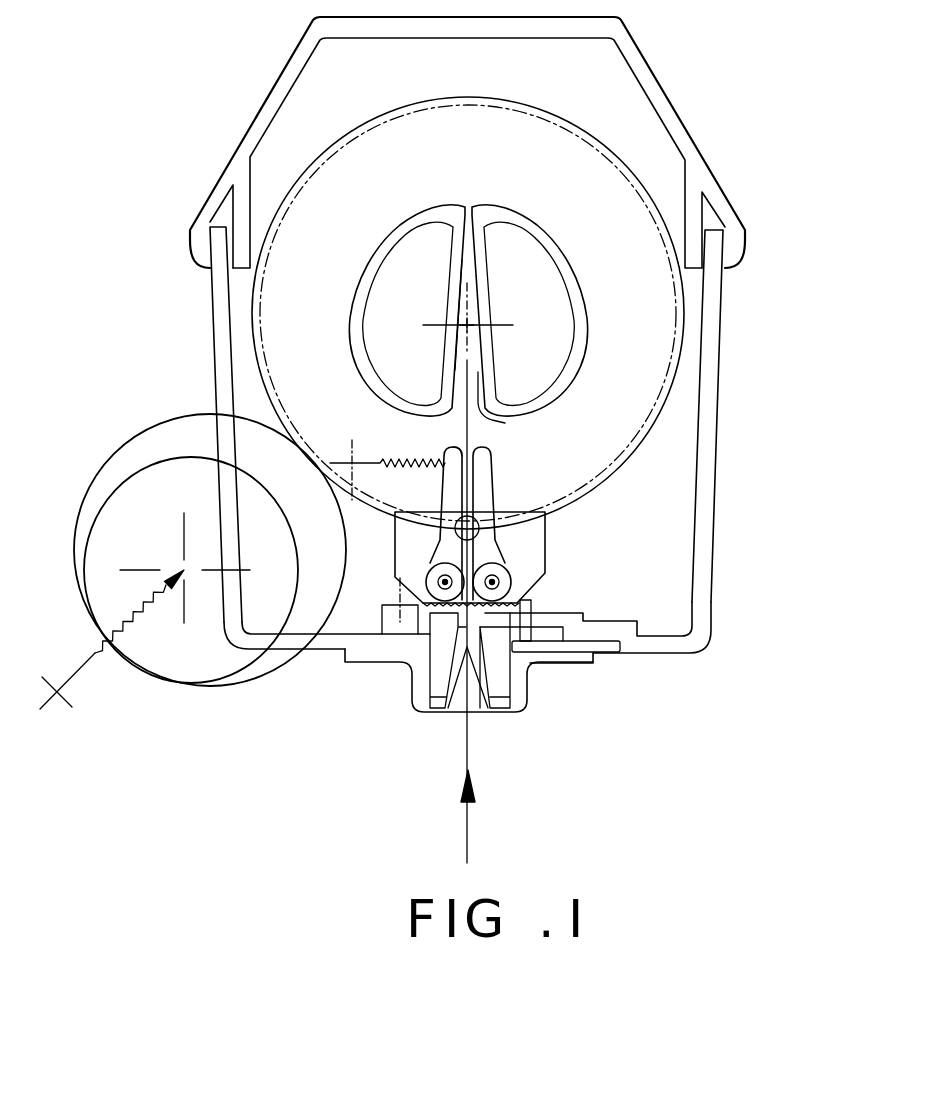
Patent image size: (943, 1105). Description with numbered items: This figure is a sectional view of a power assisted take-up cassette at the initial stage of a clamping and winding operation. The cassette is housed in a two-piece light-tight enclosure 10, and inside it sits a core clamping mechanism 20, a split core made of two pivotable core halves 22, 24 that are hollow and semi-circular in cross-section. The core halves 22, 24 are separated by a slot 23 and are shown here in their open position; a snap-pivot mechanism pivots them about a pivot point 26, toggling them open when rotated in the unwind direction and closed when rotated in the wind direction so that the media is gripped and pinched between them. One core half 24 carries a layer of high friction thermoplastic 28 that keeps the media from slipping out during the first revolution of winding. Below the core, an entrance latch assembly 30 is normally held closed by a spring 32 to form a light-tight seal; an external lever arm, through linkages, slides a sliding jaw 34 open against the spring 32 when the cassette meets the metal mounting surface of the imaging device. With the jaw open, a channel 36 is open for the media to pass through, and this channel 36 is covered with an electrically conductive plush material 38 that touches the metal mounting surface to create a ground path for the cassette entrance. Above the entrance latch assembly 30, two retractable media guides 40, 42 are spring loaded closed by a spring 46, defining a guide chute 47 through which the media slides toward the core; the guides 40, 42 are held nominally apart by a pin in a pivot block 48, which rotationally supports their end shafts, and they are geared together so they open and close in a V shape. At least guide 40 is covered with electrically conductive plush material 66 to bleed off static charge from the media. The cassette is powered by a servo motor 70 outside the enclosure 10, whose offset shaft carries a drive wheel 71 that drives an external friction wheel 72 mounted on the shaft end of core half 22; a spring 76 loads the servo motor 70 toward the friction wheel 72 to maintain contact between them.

The light-tight enclosure 10 is at (652, 66).
The external friction wheel 72 is at (546, 108).
The core clamping mechanism 20 is at (461, 185).
The pivotable core half 22 is at (350, 300).
The slot 23 is at (457, 380).
The pivotable core half 24 is at (591, 324).
The pivot point 26 is at (470, 322).
The layer of high friction thermoplastic 28 is at (503, 433).
The spring 46 is at (385, 443).
The guide chute 47 is at (450, 447).
The retractable media guide 40 is at (493, 472).
The retractable media guide 42 is at (442, 492).
The electrically conductive plush material 66 is at (495, 498).
The pivot block 48 is at (546, 544).
The spring 32 is at (540, 597).
The entrance latch assembly 30 is at (433, 736).
The sliding jaw 34 is at (498, 672).
The channel 36 is at (462, 673).
The plush material 38 is at (480, 705).
The servo motor 70 is at (78, 524).
The drive wheel 71 is at (160, 430).
The spring 76 is at (96, 650).